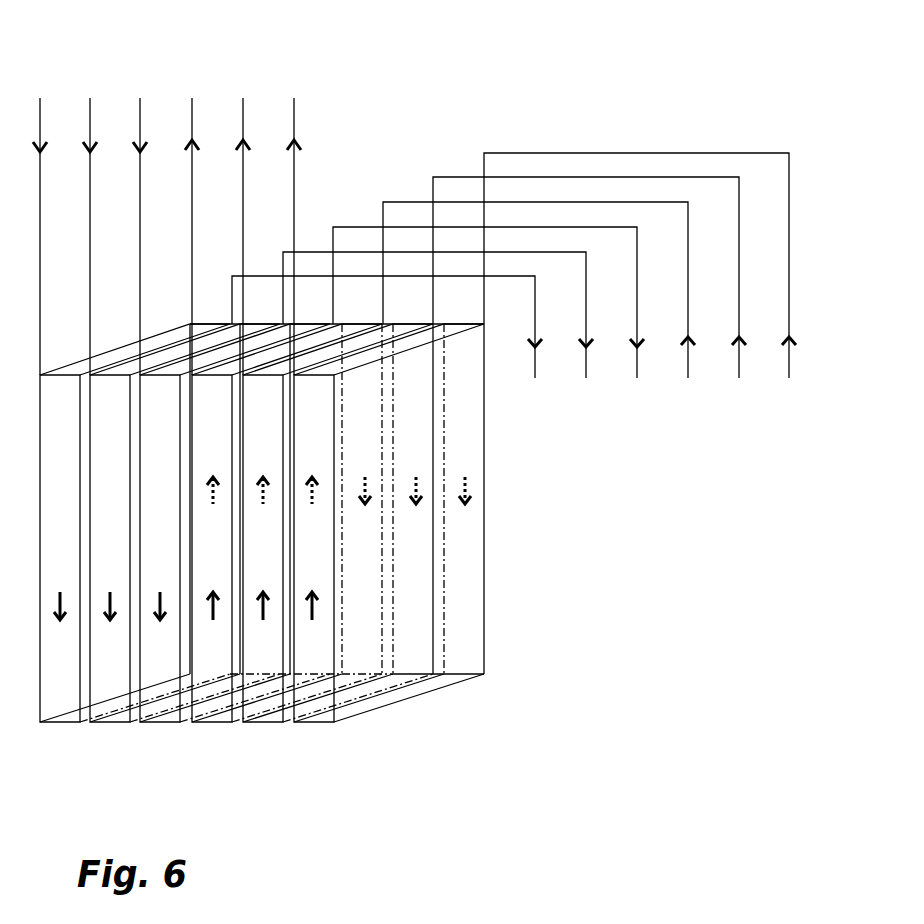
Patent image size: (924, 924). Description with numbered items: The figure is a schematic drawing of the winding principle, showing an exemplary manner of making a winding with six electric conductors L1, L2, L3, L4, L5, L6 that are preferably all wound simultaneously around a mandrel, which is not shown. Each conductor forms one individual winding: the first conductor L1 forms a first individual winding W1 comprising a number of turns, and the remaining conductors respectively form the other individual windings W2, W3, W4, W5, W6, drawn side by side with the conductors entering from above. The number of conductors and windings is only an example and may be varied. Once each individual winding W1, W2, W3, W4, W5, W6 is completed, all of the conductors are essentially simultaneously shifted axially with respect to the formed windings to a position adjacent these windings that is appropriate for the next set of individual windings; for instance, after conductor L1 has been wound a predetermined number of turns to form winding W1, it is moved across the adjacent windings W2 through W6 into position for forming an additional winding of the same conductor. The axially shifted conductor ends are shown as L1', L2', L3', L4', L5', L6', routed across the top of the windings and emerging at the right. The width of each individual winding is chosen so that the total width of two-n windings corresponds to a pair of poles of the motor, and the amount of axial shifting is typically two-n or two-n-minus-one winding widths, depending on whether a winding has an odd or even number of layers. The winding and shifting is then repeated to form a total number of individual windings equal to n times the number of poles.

The first electric conductor L1 is at (52, 209).
The second electric conductor L2 is at (101, 209).
The third electric conductor L3 is at (151, 209).
The fourth electric conductor L4 is at (201, 209).
The fifth electric conductor L5 is at (251, 209).
The sixth electric conductor L6 is at (301, 209).
The axially shifted conductor end of L1 L1' is at (394, 349).
The axially shifted conductor end of L2 L2' is at (443, 337).
The axially shifted conductor end of L3 L3' is at (492, 325).
The axially shifted conductor end of L4 L4' is at (540, 312).
The axially shifted conductor end of L5 L5' is at (589, 300).
The axially shifted conductor end of L6 L6' is at (640, 288).
The first individual winding W1 is at (135, 542).
The second individual winding W2 is at (185, 542).
The third individual winding W3 is at (235, 542).
The fourth individual winding W4 is at (287, 542).
The fifth individual winding W5 is at (337, 542).
The sixth individual winding W6 is at (388, 542).